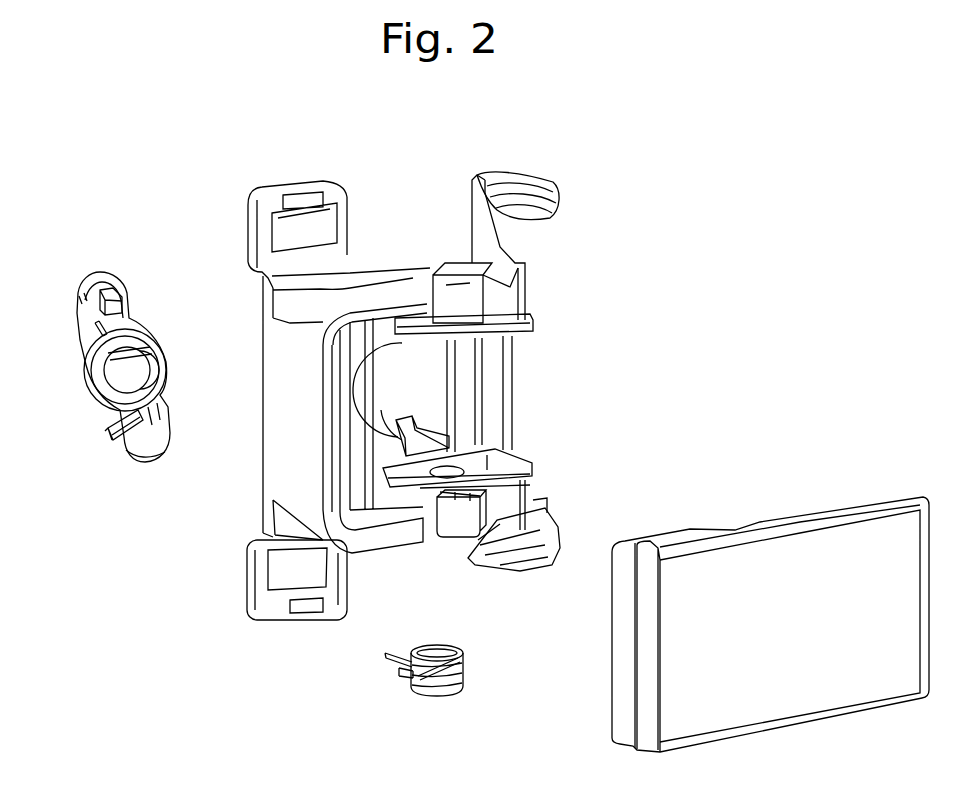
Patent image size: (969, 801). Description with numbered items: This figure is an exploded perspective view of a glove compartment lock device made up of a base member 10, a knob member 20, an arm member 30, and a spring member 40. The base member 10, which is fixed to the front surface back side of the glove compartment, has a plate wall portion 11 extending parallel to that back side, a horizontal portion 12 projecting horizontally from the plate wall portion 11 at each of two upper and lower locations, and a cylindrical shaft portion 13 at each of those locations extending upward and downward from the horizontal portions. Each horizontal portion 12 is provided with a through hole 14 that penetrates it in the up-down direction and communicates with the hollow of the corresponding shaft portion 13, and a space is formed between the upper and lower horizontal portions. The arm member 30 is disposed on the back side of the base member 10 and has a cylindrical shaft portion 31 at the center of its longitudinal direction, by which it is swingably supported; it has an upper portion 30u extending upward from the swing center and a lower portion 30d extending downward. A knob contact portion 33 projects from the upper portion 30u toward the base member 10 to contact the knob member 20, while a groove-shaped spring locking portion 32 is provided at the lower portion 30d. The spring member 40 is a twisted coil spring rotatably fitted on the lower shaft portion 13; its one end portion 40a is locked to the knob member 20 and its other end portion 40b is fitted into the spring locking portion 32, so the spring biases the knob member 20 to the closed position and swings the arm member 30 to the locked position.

The base member 10 is at (502, 370).
The plate wall portion 11 is at (395, 345).
The horizontal portion 12 is at (487, 457).
The shaft portion 13 is at (458, 300).
The through hole 14 is at (533, 474).
The knob member 20 is at (840, 553).
The arm member 30 is at (157, 450).
The upper portion of arm member 30u is at (104, 280).
The lower portion of arm member 30d is at (145, 450).
The shaft portion 31 is at (88, 357).
The spring locking portion 32 is at (117, 435).
The knob contact portion 33 is at (78, 290).
The spring member 40 is at (462, 672).
The one end portion of spring member 40a is at (403, 683).
The other end portion of spring member 40b is at (386, 648).